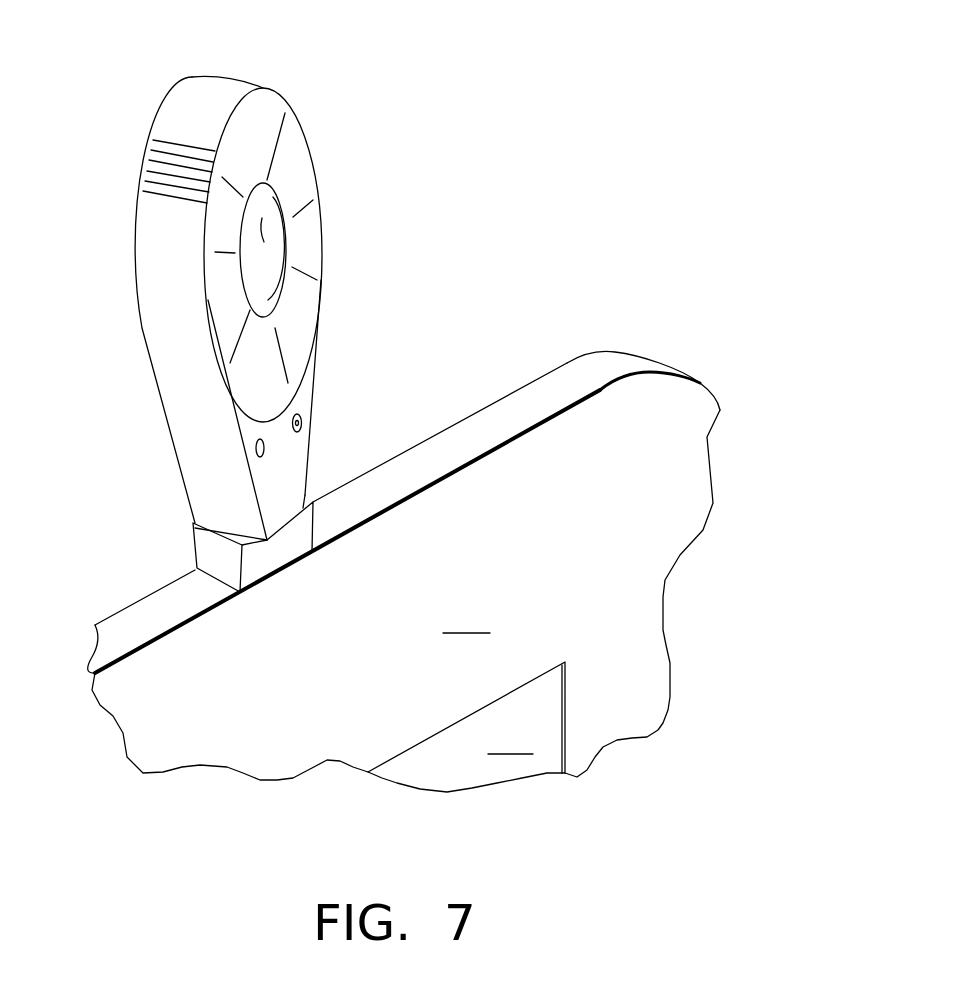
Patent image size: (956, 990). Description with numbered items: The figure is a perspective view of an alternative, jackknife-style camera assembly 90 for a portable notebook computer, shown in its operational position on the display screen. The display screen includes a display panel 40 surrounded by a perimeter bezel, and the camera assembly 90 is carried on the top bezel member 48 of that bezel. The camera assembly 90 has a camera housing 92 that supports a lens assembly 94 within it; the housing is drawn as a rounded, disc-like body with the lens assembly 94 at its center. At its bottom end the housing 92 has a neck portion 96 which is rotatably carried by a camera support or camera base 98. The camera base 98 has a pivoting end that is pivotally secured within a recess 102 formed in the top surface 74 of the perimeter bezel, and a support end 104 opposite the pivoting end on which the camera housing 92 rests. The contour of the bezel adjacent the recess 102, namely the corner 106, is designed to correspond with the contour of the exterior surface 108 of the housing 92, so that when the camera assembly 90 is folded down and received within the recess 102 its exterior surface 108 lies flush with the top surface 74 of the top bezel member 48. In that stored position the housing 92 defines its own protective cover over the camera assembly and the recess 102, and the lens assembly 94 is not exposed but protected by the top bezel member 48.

The display panel 40 is at (466, 717).
The top bezel member 48 is at (404, 591).
The top surface 74 is at (147, 622).
The camera assembly 90 is at (333, 162).
The camera housing 92 is at (207, 103).
The lens assembly 94 is at (263, 253).
The neck portion 96 is at (303, 507).
The camera base 98 is at (220, 558).
The recess 102 is at (553, 392).
The support end 104 is at (282, 550).
The corner 106 is at (628, 353).
The exterior surface 108 is at (150, 185).